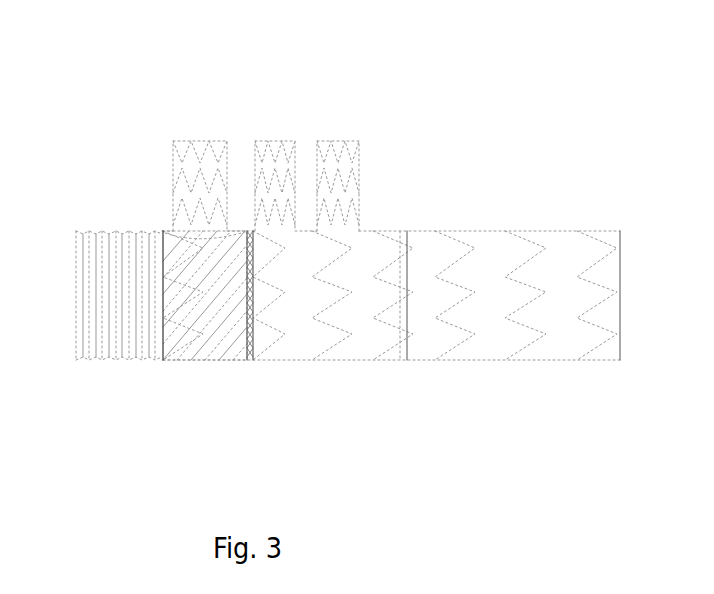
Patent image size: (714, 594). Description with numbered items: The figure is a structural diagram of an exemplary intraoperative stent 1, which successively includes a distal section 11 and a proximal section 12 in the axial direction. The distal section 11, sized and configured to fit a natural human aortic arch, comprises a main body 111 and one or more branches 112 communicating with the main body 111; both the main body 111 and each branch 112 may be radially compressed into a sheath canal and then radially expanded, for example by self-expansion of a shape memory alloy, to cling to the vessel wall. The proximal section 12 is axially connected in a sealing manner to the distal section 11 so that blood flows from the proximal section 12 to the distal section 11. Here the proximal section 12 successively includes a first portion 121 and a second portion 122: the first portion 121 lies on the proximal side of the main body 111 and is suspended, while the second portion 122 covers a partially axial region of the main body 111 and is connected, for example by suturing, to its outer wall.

The intraoperative stent 1 is at (331, 253).
The distal section 11 is at (391, 182).
The main body 111 is at (422, 245).
The branch 112 is at (266, 151).
The proximal section 12 is at (148, 367).
The first portion 121 is at (108, 357).
The second portion 122 is at (208, 334).